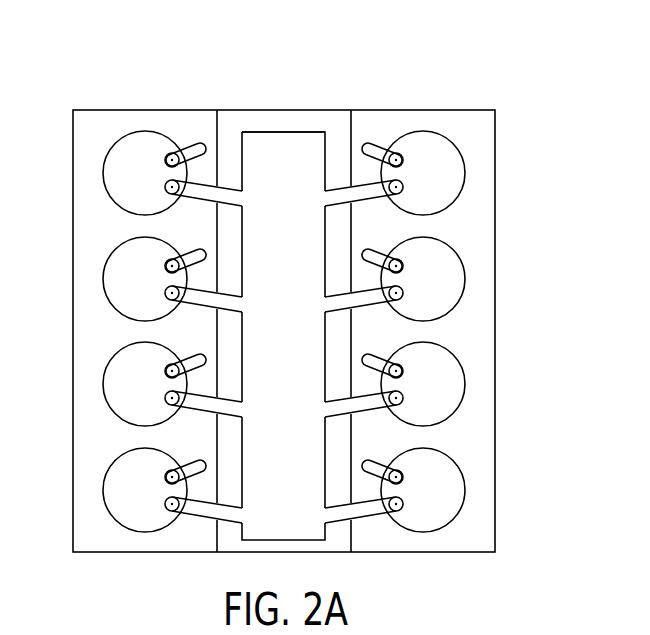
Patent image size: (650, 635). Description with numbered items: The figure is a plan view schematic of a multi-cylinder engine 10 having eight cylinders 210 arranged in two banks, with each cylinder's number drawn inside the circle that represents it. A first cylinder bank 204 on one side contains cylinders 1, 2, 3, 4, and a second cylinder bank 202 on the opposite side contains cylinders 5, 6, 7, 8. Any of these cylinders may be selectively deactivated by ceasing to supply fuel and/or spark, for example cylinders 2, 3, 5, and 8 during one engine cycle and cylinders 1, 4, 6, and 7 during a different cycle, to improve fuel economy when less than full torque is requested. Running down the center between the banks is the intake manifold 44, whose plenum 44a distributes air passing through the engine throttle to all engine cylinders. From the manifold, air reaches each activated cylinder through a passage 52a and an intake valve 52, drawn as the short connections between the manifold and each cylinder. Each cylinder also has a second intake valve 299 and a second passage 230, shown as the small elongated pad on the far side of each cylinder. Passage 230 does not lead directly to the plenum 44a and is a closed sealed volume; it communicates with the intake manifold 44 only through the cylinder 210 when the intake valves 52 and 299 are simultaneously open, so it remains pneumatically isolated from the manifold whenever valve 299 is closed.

The engine 10 is at (351, 49).
The second cylinder bank 202 is at (125, 75).
The first cylinder bank 204 is at (448, 81).
The intake manifold 44 is at (272, 347).
The plenum 44a is at (274, 165).
The intake valve 52 is at (174, 194).
The passage 52a is at (213, 193).
The cylinder 210 is at (103, 179).
The second passage 230 is at (188, 147).
The second intake valve 299 is at (172, 160).
The cylinder 1 is at (423, 173).
The cylinder 2 is at (423, 279).
The cylinder 3 is at (423, 384).
The cylinder 4 is at (423, 490).
The cylinder 5 is at (145, 173).
The cylinder 6 is at (145, 279).
The cylinder 7 is at (145, 384).
The cylinder 8 is at (145, 490).